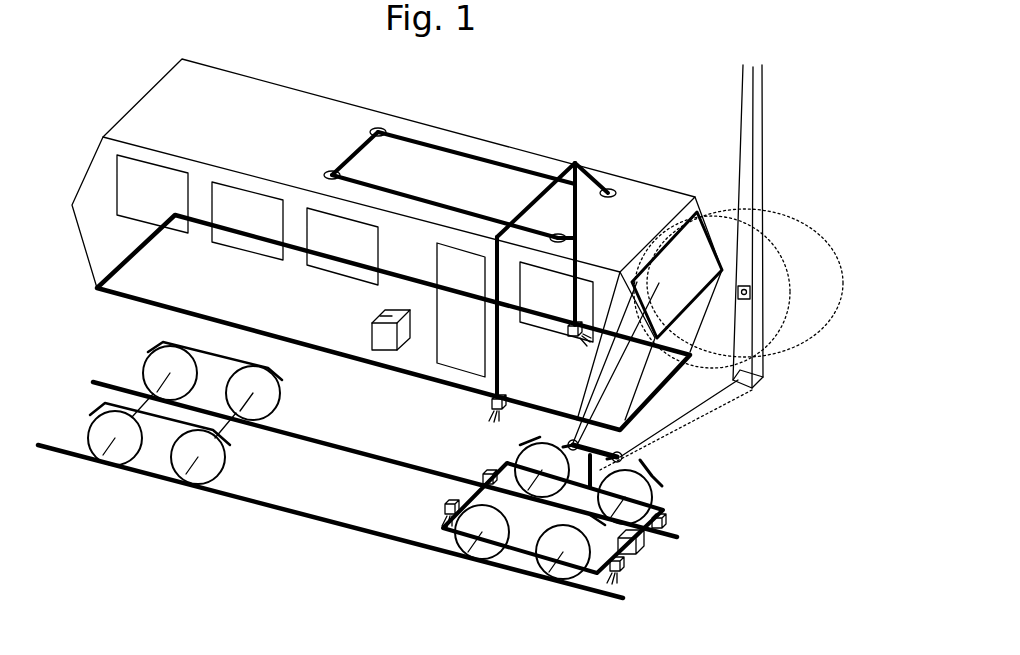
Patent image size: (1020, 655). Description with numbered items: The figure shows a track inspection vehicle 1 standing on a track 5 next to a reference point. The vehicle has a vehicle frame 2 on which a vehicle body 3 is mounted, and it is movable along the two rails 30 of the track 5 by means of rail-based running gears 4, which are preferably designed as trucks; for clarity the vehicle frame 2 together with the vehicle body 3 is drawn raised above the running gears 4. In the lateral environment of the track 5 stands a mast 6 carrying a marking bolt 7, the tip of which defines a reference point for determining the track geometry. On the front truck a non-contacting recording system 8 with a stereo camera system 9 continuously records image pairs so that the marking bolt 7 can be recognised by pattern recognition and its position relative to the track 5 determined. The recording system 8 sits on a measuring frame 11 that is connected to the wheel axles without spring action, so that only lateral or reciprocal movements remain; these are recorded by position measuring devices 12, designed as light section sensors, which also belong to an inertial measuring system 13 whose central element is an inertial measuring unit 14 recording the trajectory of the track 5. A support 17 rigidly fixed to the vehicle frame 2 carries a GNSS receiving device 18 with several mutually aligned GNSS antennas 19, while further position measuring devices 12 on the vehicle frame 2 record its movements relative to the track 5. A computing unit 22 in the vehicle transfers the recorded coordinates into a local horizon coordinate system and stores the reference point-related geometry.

The track inspection vehicle 1 is at (568, 66).
The vehicle frame 2 is at (120, 300).
The vehicle body 3 is at (158, 100).
The rail-based running gears 4 is at (152, 480).
The track 5 is at (60, 406).
The mast 6 is at (752, 138).
The marking bolt 7 is at (752, 293).
The recording system 8 is at (642, 460).
The stereo camera system 9 is at (625, 457).
The measuring frame 11 is at (572, 590).
The position measuring devices 12 is at (571, 336).
The inertial measuring system 13 is at (700, 548).
The inertial measuring unit 14 is at (646, 546).
The support 17 is at (495, 373).
The GNSS receiving device 18 is at (540, 163).
The GNSS antennas 19 is at (375, 128).
The computing unit 22 is at (371, 318).
The rails 30 is at (344, 446).